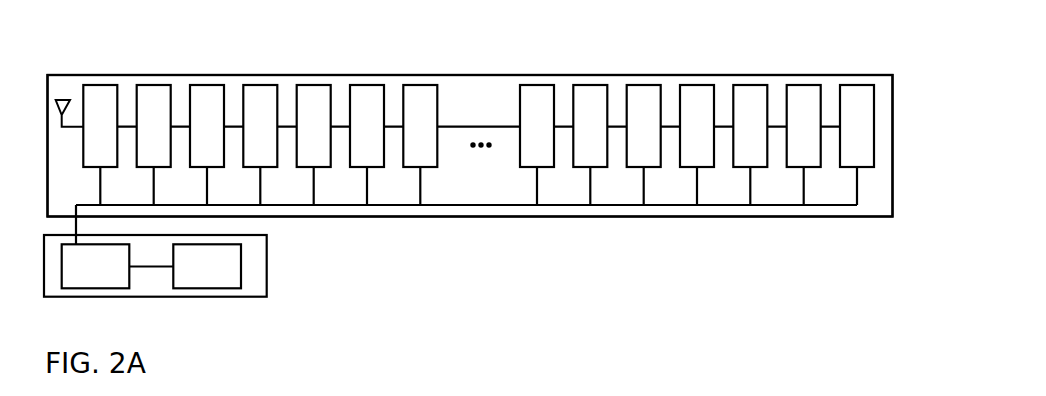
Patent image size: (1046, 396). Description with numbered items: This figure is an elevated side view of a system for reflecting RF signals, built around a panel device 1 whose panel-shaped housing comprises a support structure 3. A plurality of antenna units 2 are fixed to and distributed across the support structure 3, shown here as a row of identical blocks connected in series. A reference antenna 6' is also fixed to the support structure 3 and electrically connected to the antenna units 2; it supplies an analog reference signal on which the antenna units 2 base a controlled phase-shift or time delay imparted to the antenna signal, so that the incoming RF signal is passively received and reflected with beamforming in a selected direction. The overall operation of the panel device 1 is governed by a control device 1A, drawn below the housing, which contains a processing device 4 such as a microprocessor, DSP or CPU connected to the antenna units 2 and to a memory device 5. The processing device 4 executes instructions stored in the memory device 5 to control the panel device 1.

The panel device 1 is at (356, 62).
The control device 1A is at (267, 262).
The antenna units 2 is at (863, 116).
The support structure 3 is at (893, 150).
The processing device 4 is at (88, 278).
The memory device 5 is at (200, 278).
The reference antenna 6' is at (90, 83).